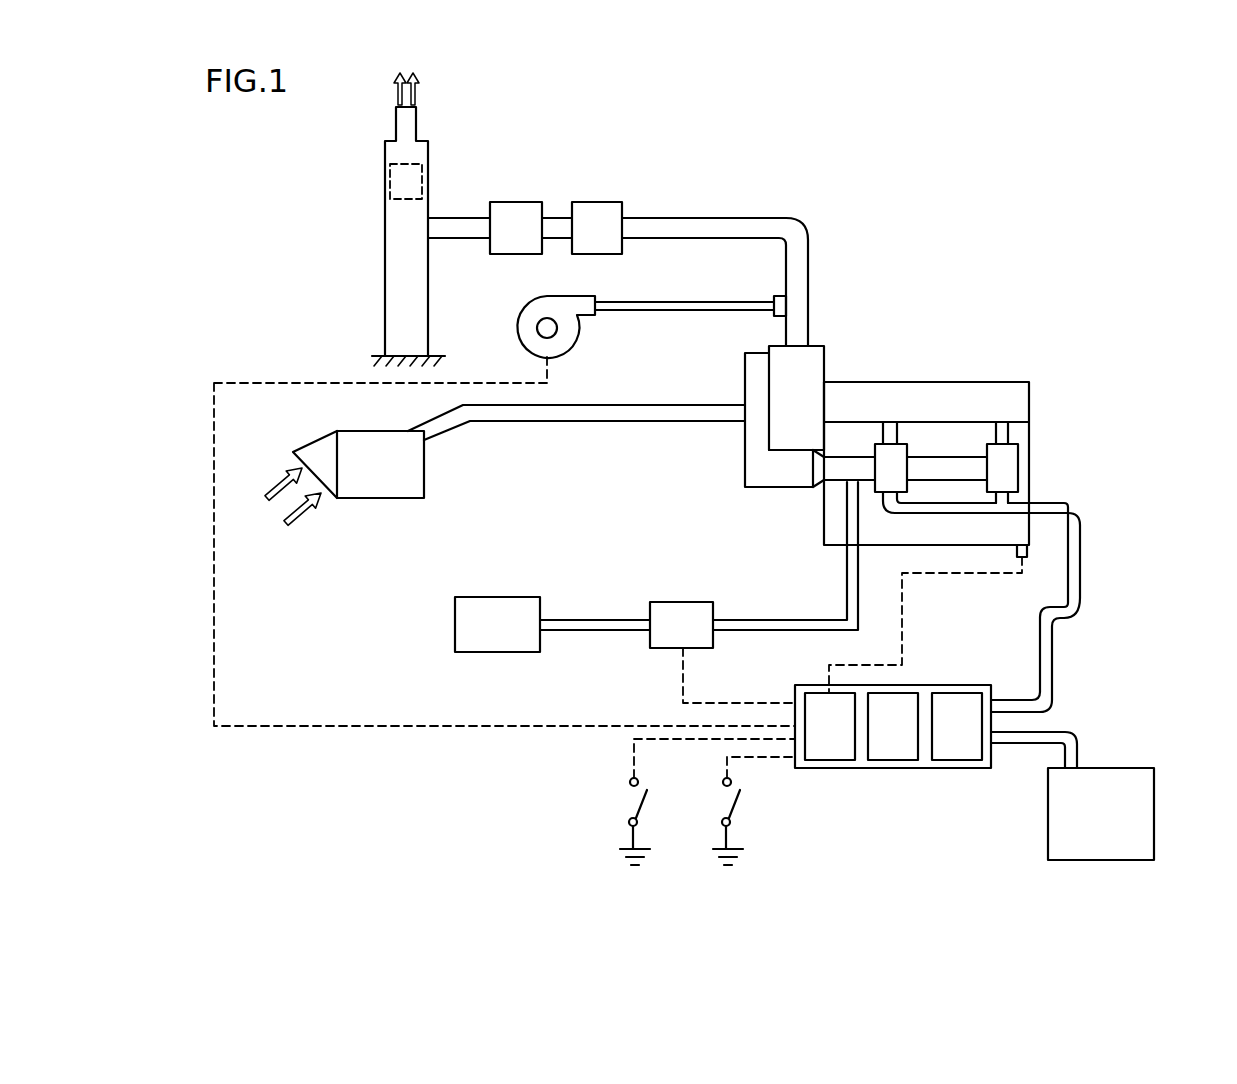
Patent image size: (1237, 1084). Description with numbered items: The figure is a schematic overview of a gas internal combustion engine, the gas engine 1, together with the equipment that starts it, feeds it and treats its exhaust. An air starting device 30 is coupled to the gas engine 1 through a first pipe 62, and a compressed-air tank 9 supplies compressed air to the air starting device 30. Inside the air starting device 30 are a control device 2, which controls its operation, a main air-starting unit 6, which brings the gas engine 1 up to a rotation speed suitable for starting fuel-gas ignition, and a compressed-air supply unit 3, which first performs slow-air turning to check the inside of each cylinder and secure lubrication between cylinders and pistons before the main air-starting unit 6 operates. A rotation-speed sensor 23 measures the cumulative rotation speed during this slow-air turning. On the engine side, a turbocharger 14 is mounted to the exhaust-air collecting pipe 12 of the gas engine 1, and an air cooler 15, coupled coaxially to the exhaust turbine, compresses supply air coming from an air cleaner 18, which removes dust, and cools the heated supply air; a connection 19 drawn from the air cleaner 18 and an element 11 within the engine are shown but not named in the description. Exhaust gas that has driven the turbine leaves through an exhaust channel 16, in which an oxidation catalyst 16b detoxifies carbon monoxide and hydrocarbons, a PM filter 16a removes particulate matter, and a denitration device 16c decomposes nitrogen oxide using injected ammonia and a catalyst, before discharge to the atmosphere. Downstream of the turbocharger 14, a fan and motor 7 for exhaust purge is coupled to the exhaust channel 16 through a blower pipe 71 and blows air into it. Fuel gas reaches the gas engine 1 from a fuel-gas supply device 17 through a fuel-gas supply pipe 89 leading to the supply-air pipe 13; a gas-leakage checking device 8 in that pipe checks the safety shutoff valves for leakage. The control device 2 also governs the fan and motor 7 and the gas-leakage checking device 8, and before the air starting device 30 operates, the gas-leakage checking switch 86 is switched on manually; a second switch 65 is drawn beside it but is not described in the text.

The gas engine 1 is at (960, 429).
The control device 2 is at (824, 745).
The compressed-air supply unit 3 is at (890, 745).
The main air-starting unit 6 is at (956, 745).
The fan and motor for exhaust purge 7 is at (577, 330).
The gas-leakage checking device 8 is at (670, 602).
The compressed-air tank 9 is at (1154, 807).
The burner 11 is at (1018, 456).
The exhaust-air collecting pipe 12 is at (937, 395).
The supply-air pipe 13 is at (971, 470).
The turbocharger 14 is at (825, 356).
The air cooler 15 is at (791, 478).
The exhaust channel 16 is at (661, 218).
The PM filter 16a is at (592, 202).
The oxidation catalyst 16b is at (513, 202).
The denitration device 16c is at (410, 163).
The fuel-gas supply device 17 is at (455, 625).
The air cleaner 18 is at (424, 471).
The air supply pipe 19 is at (578, 423).
The rotation-speed sensor 23 is at (1027, 551).
The air starting device 30 is at (893, 780).
The first pipe 62 is at (1080, 590).
The operation switch 65 is at (722, 823).
The blower pipe 71 is at (672, 302).
The gas-leakage checking switch 86 is at (629, 823).
The fuel-gas supply pipe 89 is at (757, 631).